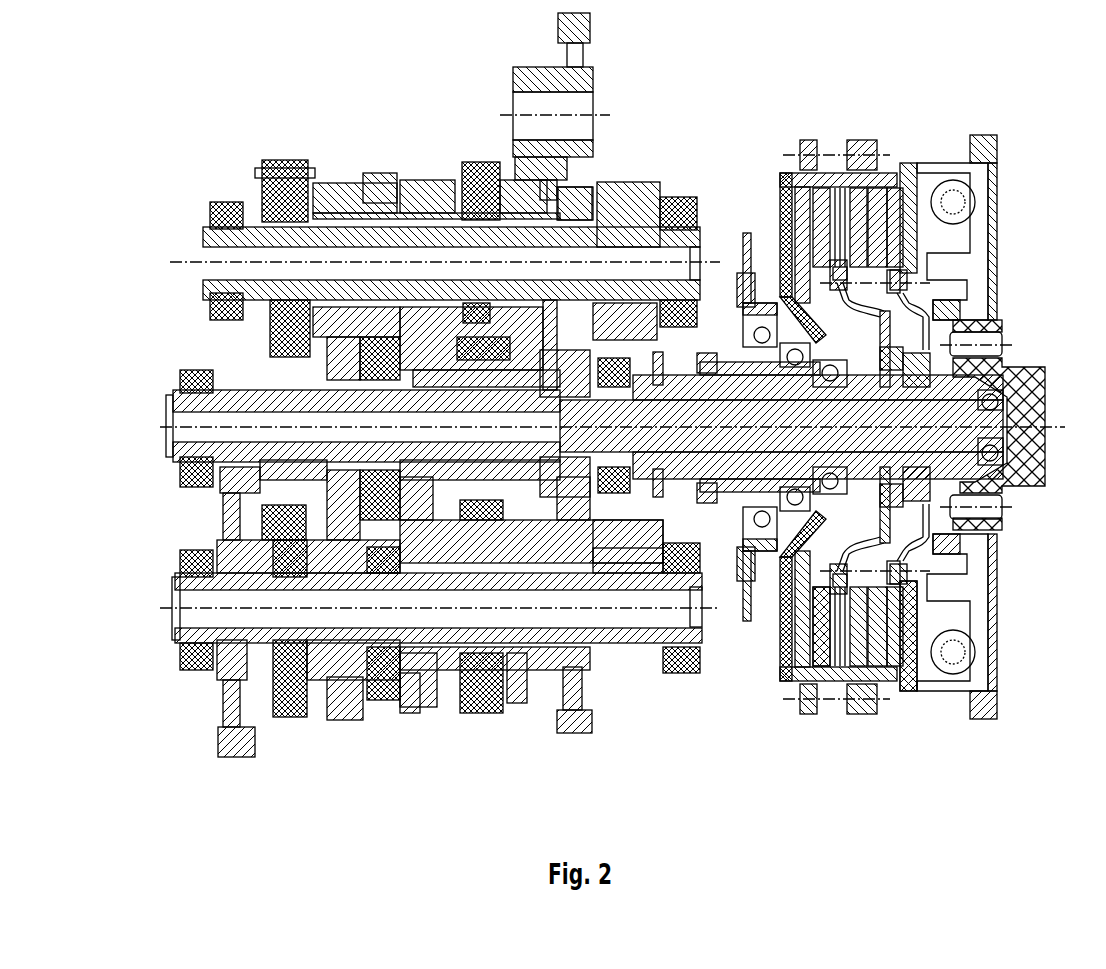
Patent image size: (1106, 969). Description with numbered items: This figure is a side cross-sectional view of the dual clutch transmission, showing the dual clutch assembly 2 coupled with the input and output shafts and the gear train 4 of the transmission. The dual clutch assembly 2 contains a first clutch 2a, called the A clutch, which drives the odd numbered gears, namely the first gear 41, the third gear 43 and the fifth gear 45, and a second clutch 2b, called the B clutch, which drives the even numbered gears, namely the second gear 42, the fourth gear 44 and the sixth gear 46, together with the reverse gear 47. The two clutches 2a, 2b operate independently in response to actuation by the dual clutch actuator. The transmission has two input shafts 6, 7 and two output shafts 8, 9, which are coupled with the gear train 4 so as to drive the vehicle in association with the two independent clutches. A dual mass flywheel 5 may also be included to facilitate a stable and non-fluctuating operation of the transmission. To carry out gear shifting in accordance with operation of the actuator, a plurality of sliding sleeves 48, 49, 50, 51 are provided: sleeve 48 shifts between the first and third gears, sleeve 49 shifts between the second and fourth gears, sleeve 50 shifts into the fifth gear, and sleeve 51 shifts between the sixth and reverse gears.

The dual clutch assembly 2 is at (850, 124).
The first clutch 2a is at (900, 657).
The second clutch 2b is at (840, 660).
The gear train 4 is at (238, 158).
The dual mass flywheel 5 is at (1020, 163).
The input shaft 6 is at (342, 455).
The input shaft 7 is at (445, 352).
The output shaft 8 is at (268, 292).
The output shaft 9 is at (305, 578).
The first gear 41 is at (230, 725).
The second gear 42 is at (577, 715).
The third gear 43 is at (337, 715).
The fourth gear 44 is at (420, 695).
The fifth gear 45 is at (380, 185).
The sixth gear 46 is at (432, 195).
The reverse gear 47 is at (540, 200).
The sliding sleeve 48 is at (282, 715).
The sliding sleeve 49 is at (485, 700).
The sliding sleeve 50 is at (288, 170).
The sliding sleeve 51 is at (492, 190).